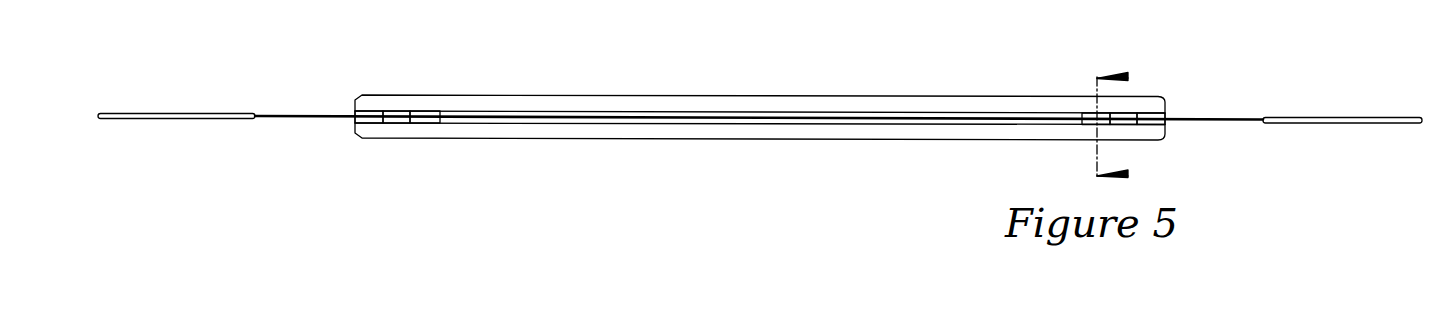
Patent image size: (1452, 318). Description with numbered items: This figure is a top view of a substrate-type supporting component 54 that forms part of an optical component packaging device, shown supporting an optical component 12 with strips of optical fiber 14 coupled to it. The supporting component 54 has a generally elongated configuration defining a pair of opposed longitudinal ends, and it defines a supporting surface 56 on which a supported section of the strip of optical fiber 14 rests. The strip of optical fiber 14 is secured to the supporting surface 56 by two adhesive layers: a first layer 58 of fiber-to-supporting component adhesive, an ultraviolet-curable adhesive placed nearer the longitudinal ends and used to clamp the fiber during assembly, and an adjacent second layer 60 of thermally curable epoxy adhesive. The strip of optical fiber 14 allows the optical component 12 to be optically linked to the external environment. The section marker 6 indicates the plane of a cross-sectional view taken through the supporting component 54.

The optical component 12 is at (762, 116).
The strip of optical fiber 14 is at (1298, 118).
The supporting component 54 is at (535, 100).
The supporting surface 56 is at (400, 124).
The first layer of fiber-to-supporting component adhesive 58 is at (370, 112).
The second layer of fiber-to-supporting component adhesive 60 is at (430, 112).
The section line 6- 6 is at (1102, 116).